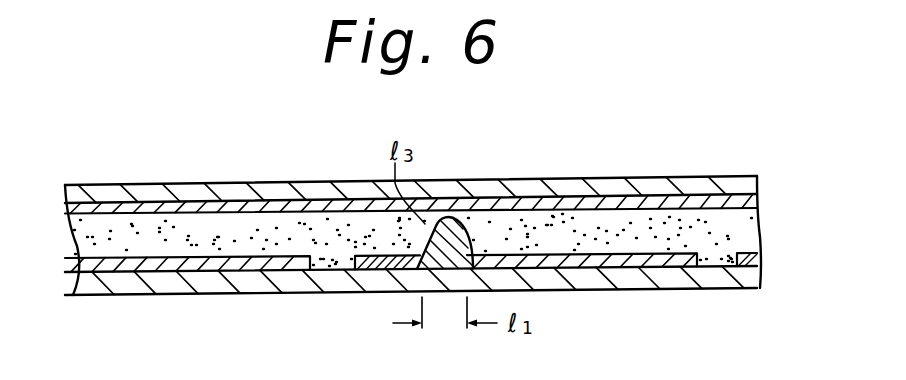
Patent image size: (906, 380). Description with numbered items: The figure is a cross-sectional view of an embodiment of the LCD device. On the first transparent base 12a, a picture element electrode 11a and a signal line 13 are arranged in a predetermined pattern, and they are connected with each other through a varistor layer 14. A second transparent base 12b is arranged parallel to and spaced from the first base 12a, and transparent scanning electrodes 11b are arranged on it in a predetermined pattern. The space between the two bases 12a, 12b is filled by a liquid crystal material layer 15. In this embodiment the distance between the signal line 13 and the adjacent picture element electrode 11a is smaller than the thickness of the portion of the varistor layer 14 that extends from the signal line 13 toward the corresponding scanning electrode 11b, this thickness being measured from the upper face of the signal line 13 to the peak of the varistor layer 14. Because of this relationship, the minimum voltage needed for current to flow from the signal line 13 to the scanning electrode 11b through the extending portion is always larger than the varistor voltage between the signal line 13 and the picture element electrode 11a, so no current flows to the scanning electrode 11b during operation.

The picture element electrode 11a is at (637, 262).
The transparent scanning electrode 11b is at (517, 208).
The first transparent base 12a is at (188, 280).
The second transparent base 12b is at (278, 183).
The signal line 13 is at (364, 268).
The varistor layer 14 is at (460, 219).
The liquid crystal material layer 15 is at (630, 228).